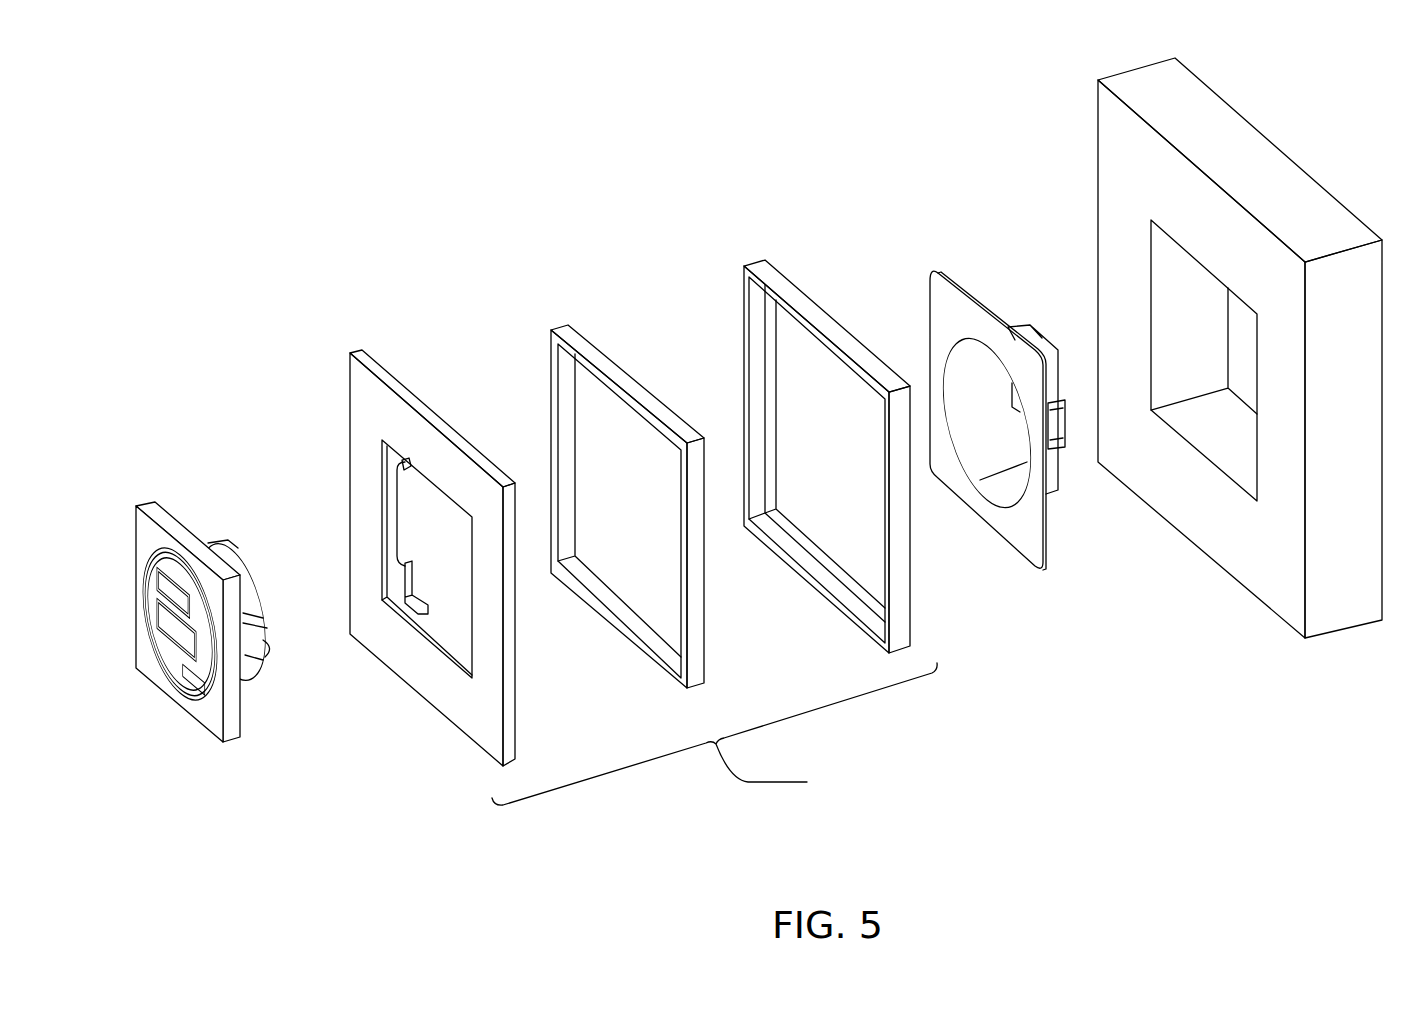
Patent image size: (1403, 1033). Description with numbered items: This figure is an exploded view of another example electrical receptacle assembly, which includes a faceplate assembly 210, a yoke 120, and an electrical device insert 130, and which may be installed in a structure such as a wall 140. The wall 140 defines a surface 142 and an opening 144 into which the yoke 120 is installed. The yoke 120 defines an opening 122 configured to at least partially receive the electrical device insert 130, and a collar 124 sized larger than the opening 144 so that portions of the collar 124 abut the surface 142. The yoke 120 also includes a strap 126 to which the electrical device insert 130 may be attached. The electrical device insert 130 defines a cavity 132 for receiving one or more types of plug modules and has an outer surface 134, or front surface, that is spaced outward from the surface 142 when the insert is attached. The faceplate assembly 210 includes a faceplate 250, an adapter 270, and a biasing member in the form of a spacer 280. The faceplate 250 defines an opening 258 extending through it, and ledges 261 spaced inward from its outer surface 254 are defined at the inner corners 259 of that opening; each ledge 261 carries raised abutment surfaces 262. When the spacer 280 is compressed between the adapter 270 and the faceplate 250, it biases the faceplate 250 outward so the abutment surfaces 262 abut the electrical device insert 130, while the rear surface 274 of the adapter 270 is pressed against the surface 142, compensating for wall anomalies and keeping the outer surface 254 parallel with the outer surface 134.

The yoke 120 is at (963, 421).
The opening 122 is at (979, 390).
The collar 124 is at (1023, 530).
The strap 126 is at (1033, 345).
The electrical device insert 130 is at (165, 521).
The cavity 132 is at (178, 648).
The outer surface 134 is at (192, 719).
The wall 140 is at (1208, 361).
The surface 142 is at (1273, 541).
The opening 144 is at (1194, 364).
The faceplate assembly 210 is at (714, 734).
The faceplate 250 is at (386, 551).
The outer surface 254 is at (432, 450).
The opening 258 is at (406, 532).
The inner corners 259 is at (381, 437).
The ledges 261 is at (380, 603).
The abutment surfaces 262 is at (402, 463).
The adapter 270 is at (849, 393).
The rear surface 274 is at (908, 597).
The spacer 280 is at (588, 350).